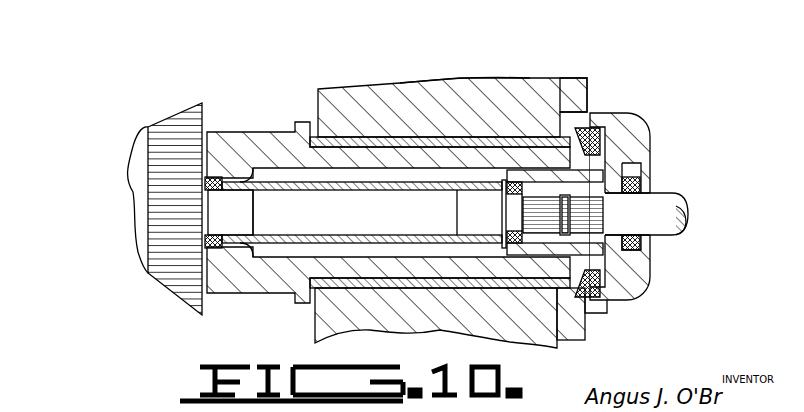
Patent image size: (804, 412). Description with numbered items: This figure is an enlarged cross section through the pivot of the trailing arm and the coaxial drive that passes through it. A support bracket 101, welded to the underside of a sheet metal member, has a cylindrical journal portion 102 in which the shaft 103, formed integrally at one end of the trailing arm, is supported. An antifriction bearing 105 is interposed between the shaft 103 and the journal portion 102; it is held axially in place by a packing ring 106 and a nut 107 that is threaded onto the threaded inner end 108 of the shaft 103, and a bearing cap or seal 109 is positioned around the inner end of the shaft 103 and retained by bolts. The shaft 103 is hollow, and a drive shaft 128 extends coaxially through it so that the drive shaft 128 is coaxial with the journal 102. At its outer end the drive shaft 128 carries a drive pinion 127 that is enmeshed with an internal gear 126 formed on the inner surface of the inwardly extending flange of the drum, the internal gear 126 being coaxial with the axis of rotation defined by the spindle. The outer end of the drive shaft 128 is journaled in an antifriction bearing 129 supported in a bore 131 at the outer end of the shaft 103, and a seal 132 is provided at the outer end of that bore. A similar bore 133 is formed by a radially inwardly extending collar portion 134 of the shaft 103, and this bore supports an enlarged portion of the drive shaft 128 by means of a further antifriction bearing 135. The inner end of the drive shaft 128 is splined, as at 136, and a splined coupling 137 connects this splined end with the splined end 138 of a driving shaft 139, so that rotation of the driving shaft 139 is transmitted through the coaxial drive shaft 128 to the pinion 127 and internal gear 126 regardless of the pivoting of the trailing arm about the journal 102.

The support bracket 101 is at (530, 78).
The cylindrical journal portion 102 is at (492, 95).
The shaft 103 is at (263, 130).
The antifriction bearing 105 is at (380, 130).
The packing ring 106 is at (592, 113).
The nut 107 is at (650, 122).
The threaded inner end 108 is at (651, 142).
The bearing cap or seal 109 is at (612, 317).
The internal gear 126 is at (167, 157).
The drive pinion 127 is at (163, 213).
The drive shaft 128 is at (330, 222).
The antifriction bearing 129 is at (228, 178).
The bore 131 is at (233, 212).
The seal 132 is at (213, 176).
The bore 133 is at (505, 140).
The collar portion 134 is at (442, 190).
The antifriction bearing 135 is at (487, 243).
The splined inner end 136 is at (545, 227).
The splined coupling 137 is at (643, 168).
The splined end 138 is at (648, 198).
The driving shaft 139 is at (690, 210).